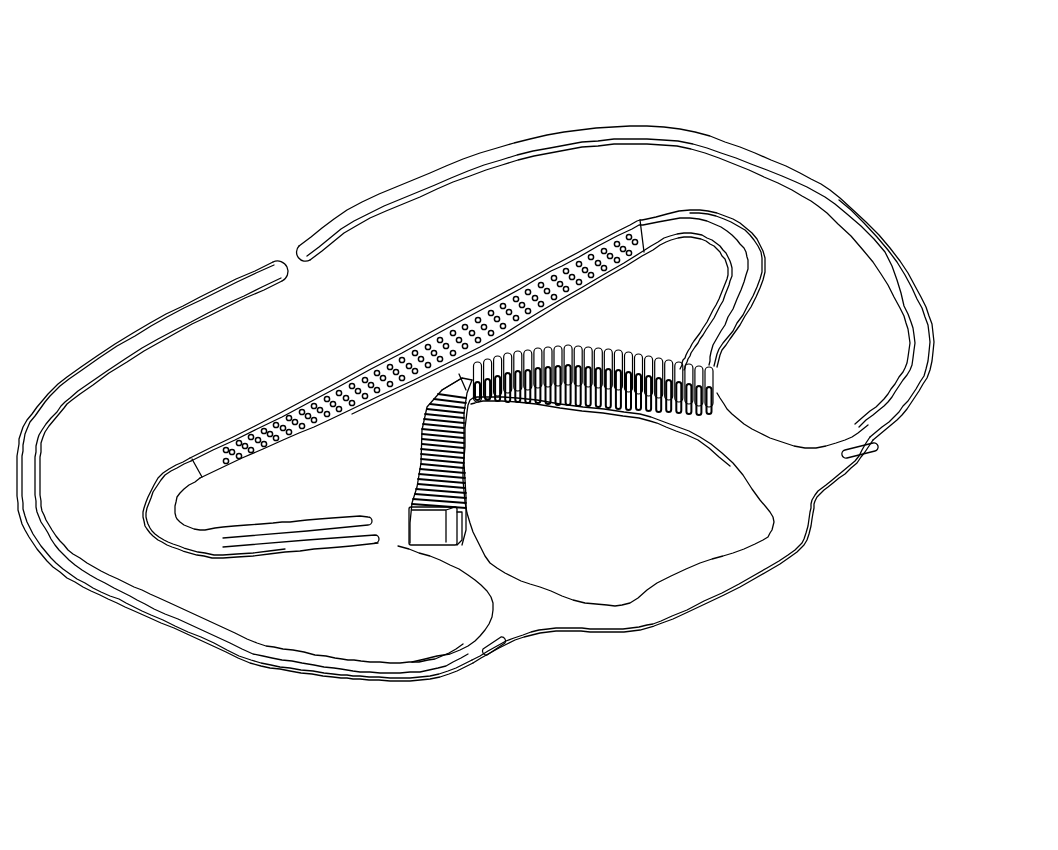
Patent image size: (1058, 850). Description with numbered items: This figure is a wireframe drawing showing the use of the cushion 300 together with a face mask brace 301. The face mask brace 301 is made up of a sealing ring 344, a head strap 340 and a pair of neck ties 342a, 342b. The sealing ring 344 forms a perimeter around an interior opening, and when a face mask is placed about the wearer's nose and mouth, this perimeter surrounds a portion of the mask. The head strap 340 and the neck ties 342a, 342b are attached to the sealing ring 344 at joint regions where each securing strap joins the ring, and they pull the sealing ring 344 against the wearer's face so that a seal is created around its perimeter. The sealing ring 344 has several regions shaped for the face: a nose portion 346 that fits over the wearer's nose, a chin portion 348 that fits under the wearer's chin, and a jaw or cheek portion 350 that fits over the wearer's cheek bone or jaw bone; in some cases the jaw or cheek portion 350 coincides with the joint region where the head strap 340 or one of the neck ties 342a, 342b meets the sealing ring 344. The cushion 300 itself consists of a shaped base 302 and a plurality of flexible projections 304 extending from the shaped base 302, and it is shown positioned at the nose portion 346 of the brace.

The face mask brace 301 is at (132, 46).
The cushion 300 is at (630, 343).
The shaped base 302 is at (636, 420).
The flexible projections 304 is at (420, 432).
The head strap 340 is at (514, 286).
The neck tie 342a is at (462, 167).
The neck tie 342b is at (150, 322).
The sealing ring 344 is at (524, 584).
The nose portion 346 is at (497, 401).
The chin portion 348 is at (744, 572).
The jaw or cheek portion 350 is at (758, 447).